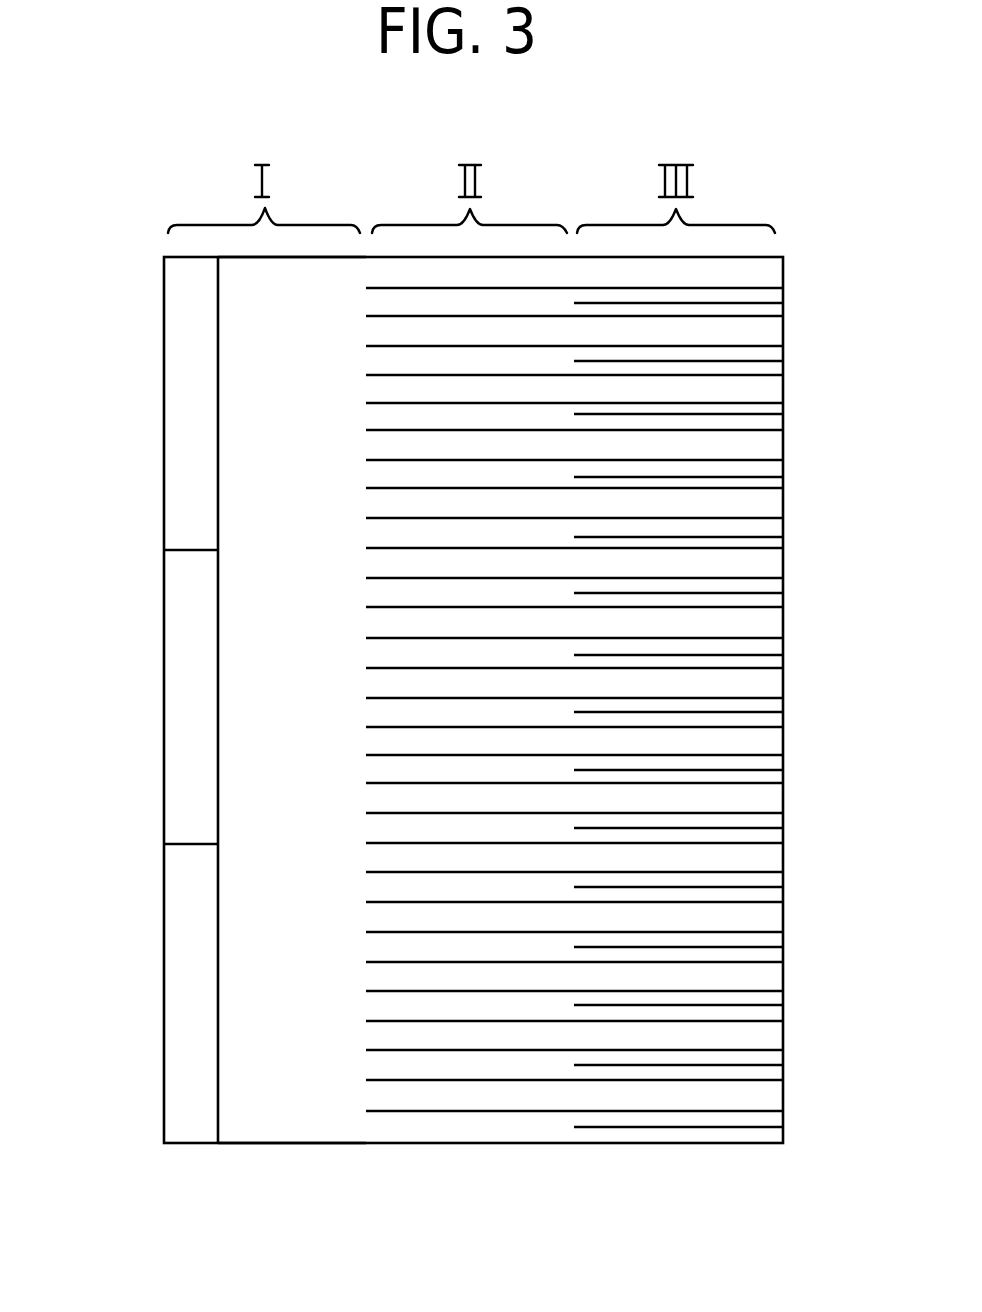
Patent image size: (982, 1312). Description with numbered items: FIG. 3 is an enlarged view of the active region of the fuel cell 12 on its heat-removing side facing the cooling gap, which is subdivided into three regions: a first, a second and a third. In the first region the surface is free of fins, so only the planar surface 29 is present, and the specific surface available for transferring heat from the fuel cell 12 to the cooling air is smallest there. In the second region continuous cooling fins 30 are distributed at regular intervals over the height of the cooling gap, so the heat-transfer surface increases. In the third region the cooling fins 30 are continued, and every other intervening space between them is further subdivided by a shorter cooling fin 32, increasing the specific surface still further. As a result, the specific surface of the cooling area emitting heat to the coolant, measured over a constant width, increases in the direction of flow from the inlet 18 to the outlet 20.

The fuel cell 12 is at (205, 1115).
The inlet 18 is at (163, 467).
The outlet 20 is at (786, 572).
The planar surface 29 is at (306, 1112).
The cooling fins 30 is at (480, 1113).
The shorter cooling fin 32 is at (723, 420).